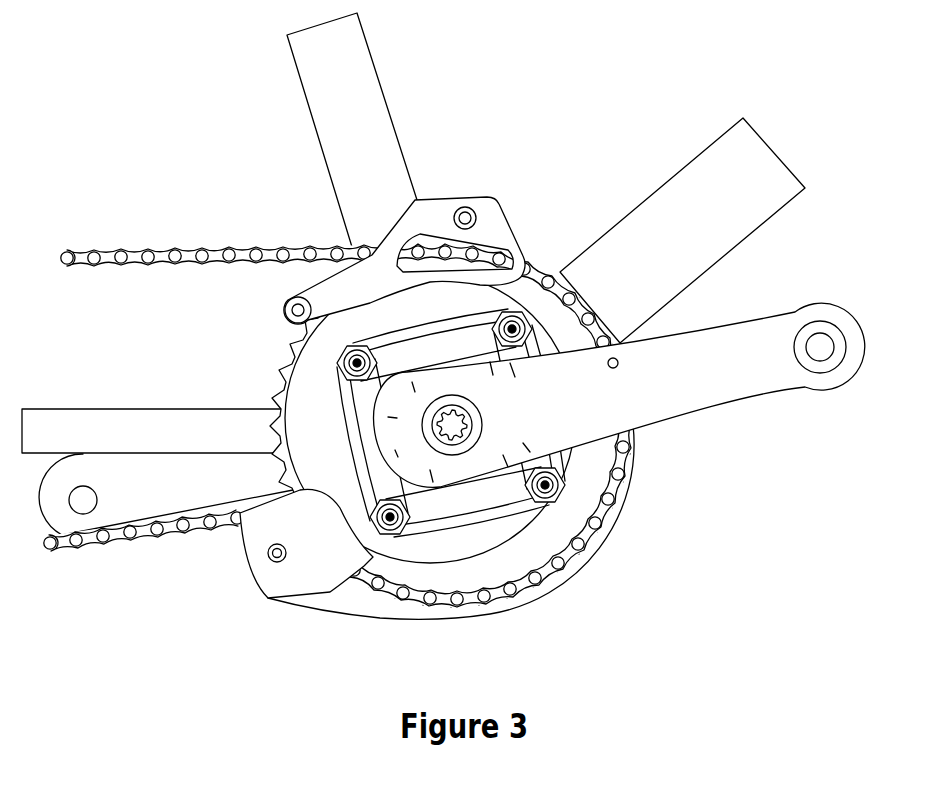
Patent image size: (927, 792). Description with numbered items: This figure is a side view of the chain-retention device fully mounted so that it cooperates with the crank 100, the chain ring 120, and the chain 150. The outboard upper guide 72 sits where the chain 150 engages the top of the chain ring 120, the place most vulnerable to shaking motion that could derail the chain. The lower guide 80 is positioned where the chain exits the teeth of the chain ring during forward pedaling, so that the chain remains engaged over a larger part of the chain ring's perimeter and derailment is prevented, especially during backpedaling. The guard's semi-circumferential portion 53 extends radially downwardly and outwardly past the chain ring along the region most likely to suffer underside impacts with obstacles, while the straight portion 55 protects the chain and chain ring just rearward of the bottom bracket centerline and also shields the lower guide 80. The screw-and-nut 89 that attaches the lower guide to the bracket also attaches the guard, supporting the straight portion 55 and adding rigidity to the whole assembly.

The outboard upper guide 72 is at (438, 217).
The chain 150 is at (183, 258).
The crank 100 is at (814, 312).
The chain ring 120 is at (582, 490).
The semi-circumferential portion 53 is at (588, 553).
The lower guide 80 is at (302, 573).
The straight portion 55 is at (357, 603).
The screw-and-nut 89 is at (276, 555).